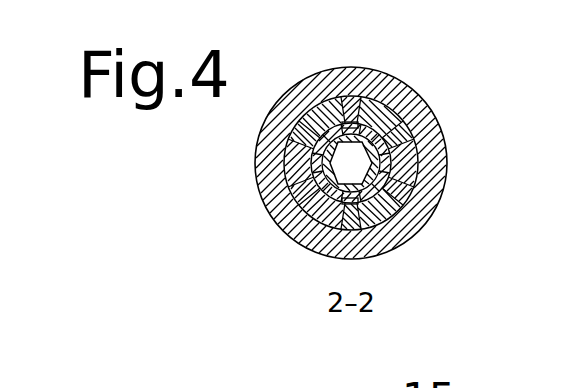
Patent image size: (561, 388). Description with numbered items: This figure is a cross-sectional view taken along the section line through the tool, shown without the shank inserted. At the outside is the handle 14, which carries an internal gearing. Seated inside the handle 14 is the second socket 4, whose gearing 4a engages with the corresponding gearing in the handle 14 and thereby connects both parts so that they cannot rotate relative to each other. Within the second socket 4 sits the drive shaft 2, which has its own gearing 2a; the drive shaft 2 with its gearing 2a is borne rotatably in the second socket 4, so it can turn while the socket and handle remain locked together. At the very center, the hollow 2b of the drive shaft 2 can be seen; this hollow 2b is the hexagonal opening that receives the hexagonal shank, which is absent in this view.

The handle 14 is at (270, 165).
The second socket 4 is at (410, 125).
The gearing of the second socket 4a is at (405, 186).
The gearing of the drive shaft 2a is at (312, 207).
The drive shaft 2 is at (374, 150).
The hollow 2b is at (350, 163).